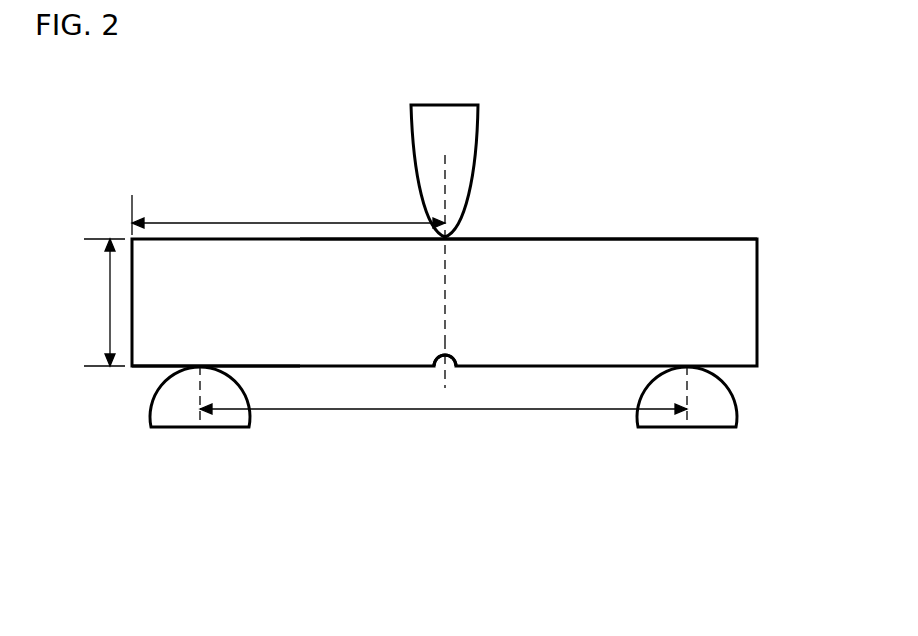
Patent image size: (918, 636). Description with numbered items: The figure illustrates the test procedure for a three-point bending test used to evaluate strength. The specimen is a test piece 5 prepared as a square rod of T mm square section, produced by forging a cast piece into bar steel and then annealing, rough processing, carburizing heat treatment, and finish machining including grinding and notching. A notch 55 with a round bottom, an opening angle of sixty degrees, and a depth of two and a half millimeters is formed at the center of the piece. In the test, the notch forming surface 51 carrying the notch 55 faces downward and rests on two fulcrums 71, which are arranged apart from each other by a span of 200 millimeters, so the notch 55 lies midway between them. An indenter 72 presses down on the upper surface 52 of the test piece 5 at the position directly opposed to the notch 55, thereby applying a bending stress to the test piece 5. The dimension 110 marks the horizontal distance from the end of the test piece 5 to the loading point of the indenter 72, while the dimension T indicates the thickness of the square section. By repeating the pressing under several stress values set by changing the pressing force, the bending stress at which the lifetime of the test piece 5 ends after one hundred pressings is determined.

The test piece 5 is at (706, 258).
The notch forming surface 51 is at (150, 368).
The upper surface 52 is at (540, 238).
The notch 55 is at (440, 365).
The fulcrums 71 is at (186, 410).
The indenter 72 is at (456, 128).
The distance from end to load point 110 is at (288, 213).
The support span 200 is at (443, 423).
The specimen thickness T is at (104, 302).